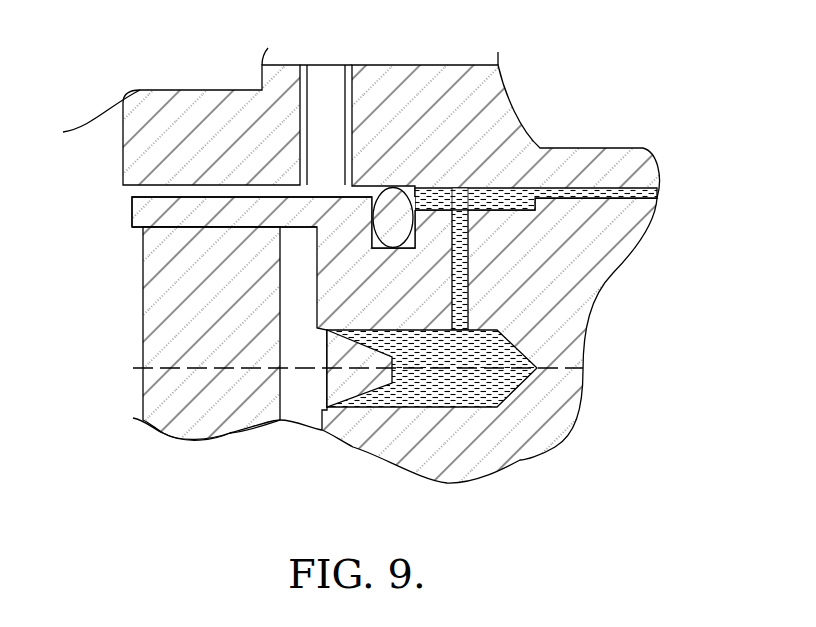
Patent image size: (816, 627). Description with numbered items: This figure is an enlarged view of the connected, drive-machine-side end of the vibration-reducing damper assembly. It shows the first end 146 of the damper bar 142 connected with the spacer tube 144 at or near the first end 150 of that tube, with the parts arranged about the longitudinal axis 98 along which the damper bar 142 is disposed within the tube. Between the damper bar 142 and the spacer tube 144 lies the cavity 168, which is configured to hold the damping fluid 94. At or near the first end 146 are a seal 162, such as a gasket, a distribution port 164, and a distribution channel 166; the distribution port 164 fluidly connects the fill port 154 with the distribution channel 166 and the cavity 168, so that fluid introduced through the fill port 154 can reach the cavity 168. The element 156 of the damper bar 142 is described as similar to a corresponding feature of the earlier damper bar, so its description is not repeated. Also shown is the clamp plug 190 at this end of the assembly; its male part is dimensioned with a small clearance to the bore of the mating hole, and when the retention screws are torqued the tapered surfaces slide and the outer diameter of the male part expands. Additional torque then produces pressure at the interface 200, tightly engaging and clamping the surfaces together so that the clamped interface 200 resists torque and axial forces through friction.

The interface 200 is at (385, 117).
The first end of damper bar 146 is at (217, 210).
The first end of spacer tube 150 is at (237, 107).
The seal 162 is at (397, 208).
The distribution port 164 is at (462, 208).
The distribution channel 166 is at (487, 190).
The damping fluid 94 is at (553, 136).
The cavity 168 is at (605, 190).
The spacer tube 144 is at (638, 170).
The damper bar 142 is at (537, 277).
The clamp plug 190 is at (173, 341).
The longitudinal axis 98 is at (337, 384).
The damper bar element 156 is at (353, 380).
The fill port 154 is at (452, 383).